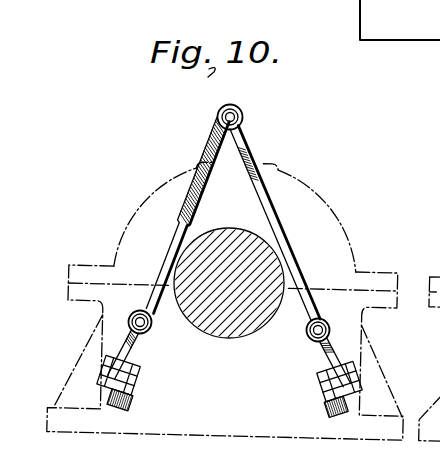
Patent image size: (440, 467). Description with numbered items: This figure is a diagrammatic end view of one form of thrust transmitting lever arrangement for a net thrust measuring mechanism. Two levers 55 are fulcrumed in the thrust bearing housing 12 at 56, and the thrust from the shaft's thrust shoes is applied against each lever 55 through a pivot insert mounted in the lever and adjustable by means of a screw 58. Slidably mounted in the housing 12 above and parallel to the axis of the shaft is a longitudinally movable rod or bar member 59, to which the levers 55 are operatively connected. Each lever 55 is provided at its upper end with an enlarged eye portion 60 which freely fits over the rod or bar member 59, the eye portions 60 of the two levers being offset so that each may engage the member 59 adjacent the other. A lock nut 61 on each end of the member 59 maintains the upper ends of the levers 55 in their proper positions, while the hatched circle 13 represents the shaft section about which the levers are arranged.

The thrust bearing housing 12 is at (318, 205).
The shaft 13 is at (279, 263).
The lever 55 is at (262, 198).
The fulcrum 56 is at (324, 398).
The screw 58 is at (308, 338).
The rod or bar member 59 is at (243, 118).
The eye portion 60 is at (232, 109).
The lock nut 61 is at (218, 117).